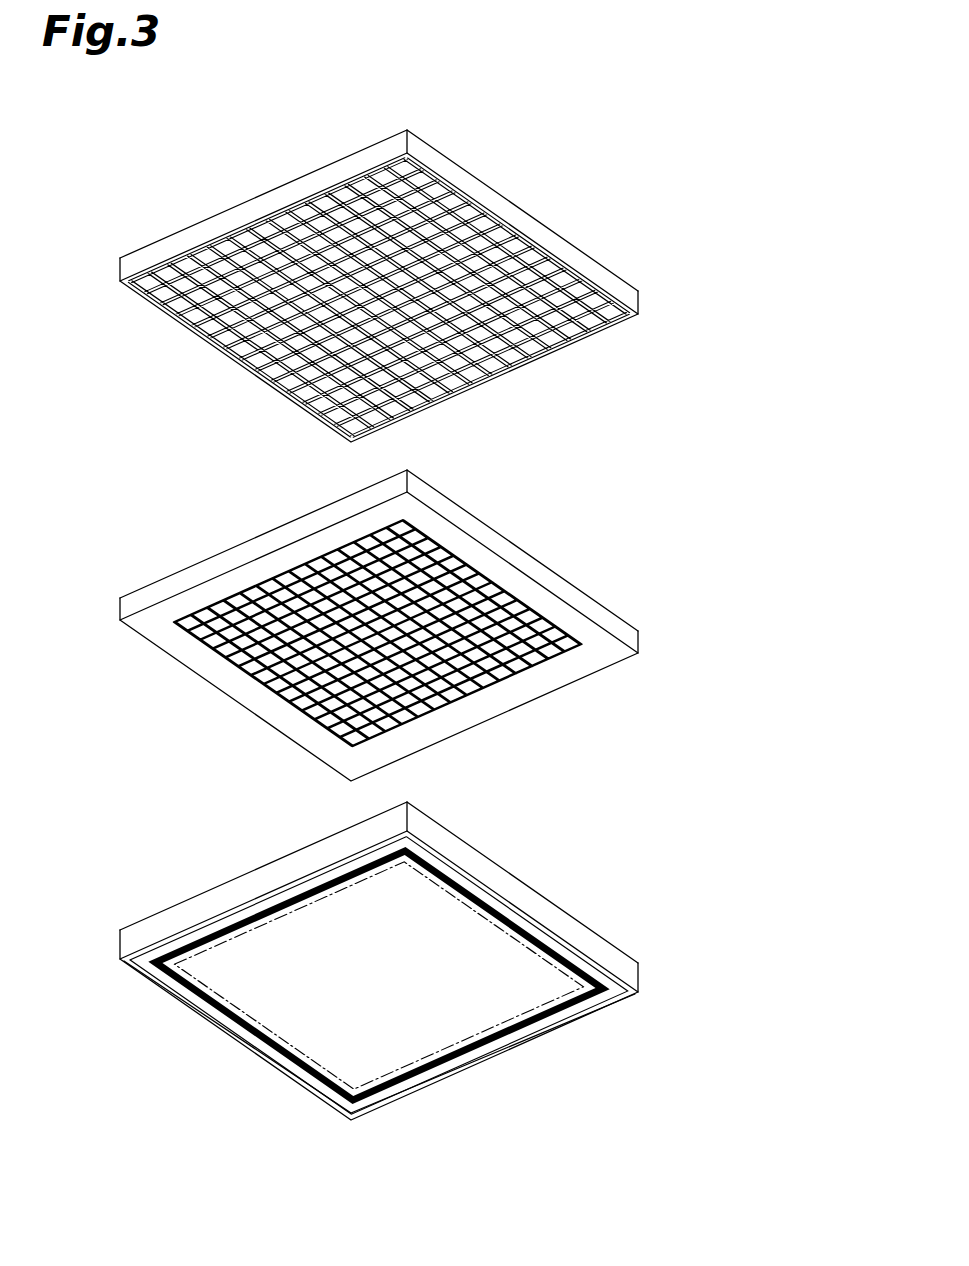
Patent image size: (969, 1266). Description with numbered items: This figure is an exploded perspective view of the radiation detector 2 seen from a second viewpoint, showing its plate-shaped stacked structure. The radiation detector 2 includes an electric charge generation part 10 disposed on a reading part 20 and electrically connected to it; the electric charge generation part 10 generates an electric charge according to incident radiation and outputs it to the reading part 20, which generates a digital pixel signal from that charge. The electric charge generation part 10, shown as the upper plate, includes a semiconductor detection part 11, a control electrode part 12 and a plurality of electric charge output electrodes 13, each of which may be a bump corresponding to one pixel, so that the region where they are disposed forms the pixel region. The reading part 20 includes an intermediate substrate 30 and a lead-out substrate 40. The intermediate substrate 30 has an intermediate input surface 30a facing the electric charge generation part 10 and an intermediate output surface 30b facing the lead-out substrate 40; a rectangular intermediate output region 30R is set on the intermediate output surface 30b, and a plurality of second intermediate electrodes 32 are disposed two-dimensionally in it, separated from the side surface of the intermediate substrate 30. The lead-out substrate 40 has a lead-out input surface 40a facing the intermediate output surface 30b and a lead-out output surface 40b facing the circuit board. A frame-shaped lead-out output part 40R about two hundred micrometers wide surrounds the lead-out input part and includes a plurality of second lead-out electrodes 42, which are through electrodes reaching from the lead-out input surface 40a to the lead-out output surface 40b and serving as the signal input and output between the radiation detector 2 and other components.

The radiation detector 2 is at (823, 118).
The electric charge generation part 10 is at (413, 128).
The semiconductor detection part 11 is at (642, 305).
The control electrode part 12 is at (640, 291).
The electric charge output electrode 13 is at (583, 333).
The reading part 20 is at (745, 529).
The intermediate substrate 30 is at (566, 578).
The intermediate input surface 30a is at (435, 490).
The intermediate output surface 30b is at (607, 652).
The intermediate output region 30R is at (210, 607).
The second intermediate electrode 32 is at (497, 690).
The lead-out substrate 40 is at (606, 930).
The lead-out input surface 40a is at (435, 822).
The lead-out output surface 40b is at (615, 990).
The lead-out output part 40R is at (150, 962).
The second lead-out electrode 42 is at (497, 1050).